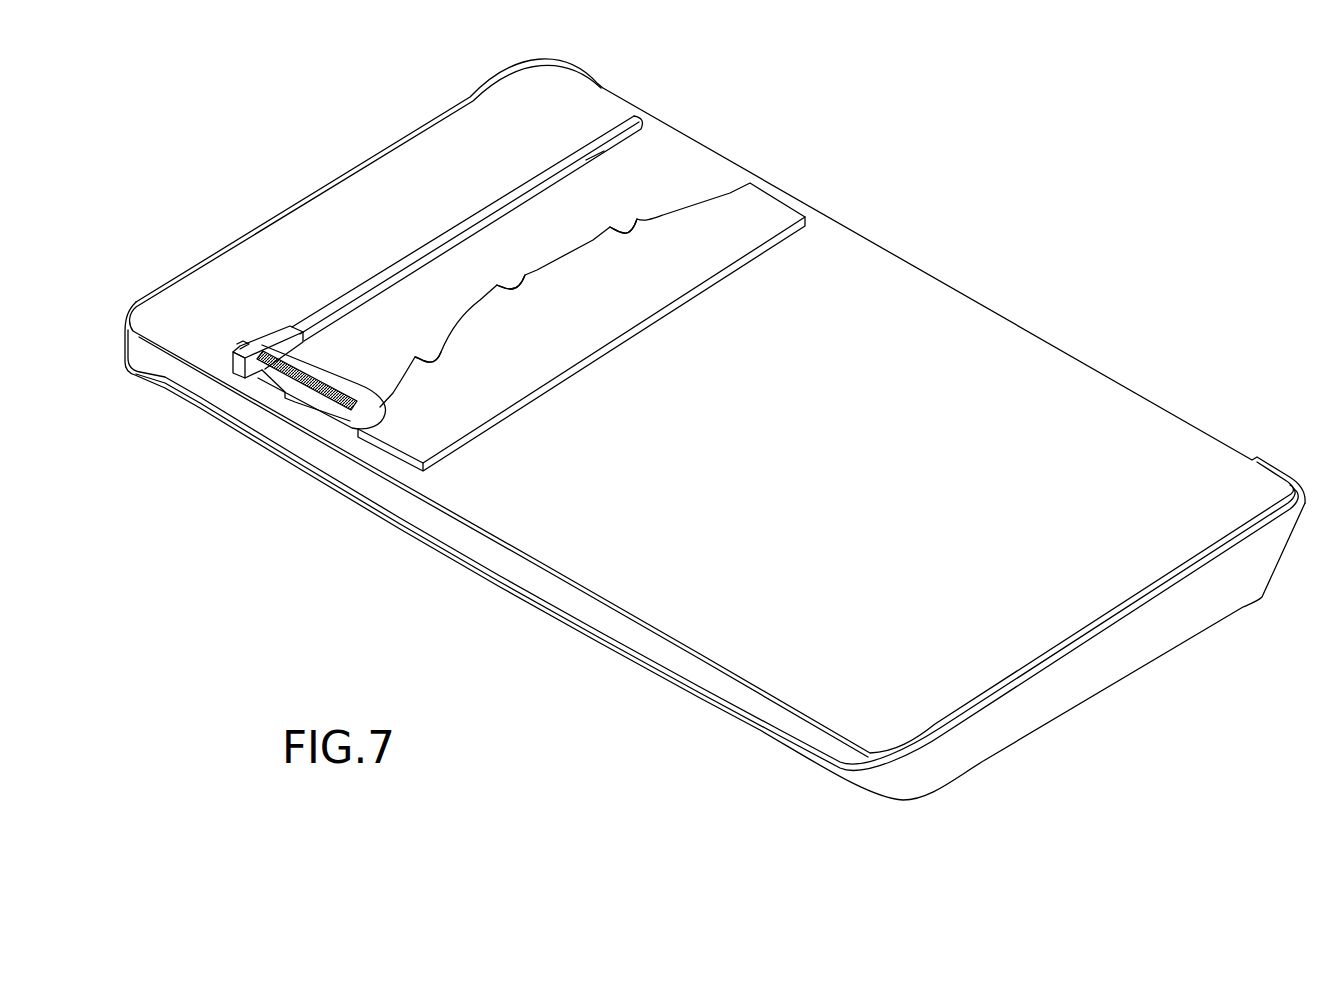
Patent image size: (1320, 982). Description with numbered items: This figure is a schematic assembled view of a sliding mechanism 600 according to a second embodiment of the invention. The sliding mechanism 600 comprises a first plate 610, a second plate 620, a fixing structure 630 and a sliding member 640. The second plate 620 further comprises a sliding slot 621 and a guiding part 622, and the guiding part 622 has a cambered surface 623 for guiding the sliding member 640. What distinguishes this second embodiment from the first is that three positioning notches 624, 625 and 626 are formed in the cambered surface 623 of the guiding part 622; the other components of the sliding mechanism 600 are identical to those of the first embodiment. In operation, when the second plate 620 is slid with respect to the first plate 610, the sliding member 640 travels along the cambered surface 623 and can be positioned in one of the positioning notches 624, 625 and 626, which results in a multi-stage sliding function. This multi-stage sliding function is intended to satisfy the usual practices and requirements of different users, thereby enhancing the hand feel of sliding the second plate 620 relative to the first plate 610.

The sliding mechanism 600 is at (1059, 114).
The first plate 610 is at (1193, 607).
The second plate 620 is at (1030, 356).
The sliding slot 621 is at (520, 191).
The guiding part 622 is at (603, 330).
The cambered surface 623 is at (405, 388).
The positioning notch 624 is at (437, 356).
The positioning notch 625 is at (513, 284).
The positioning notch 626 is at (626, 229).
The fixing structure 630 is at (258, 335).
The sliding member 640 is at (328, 355).